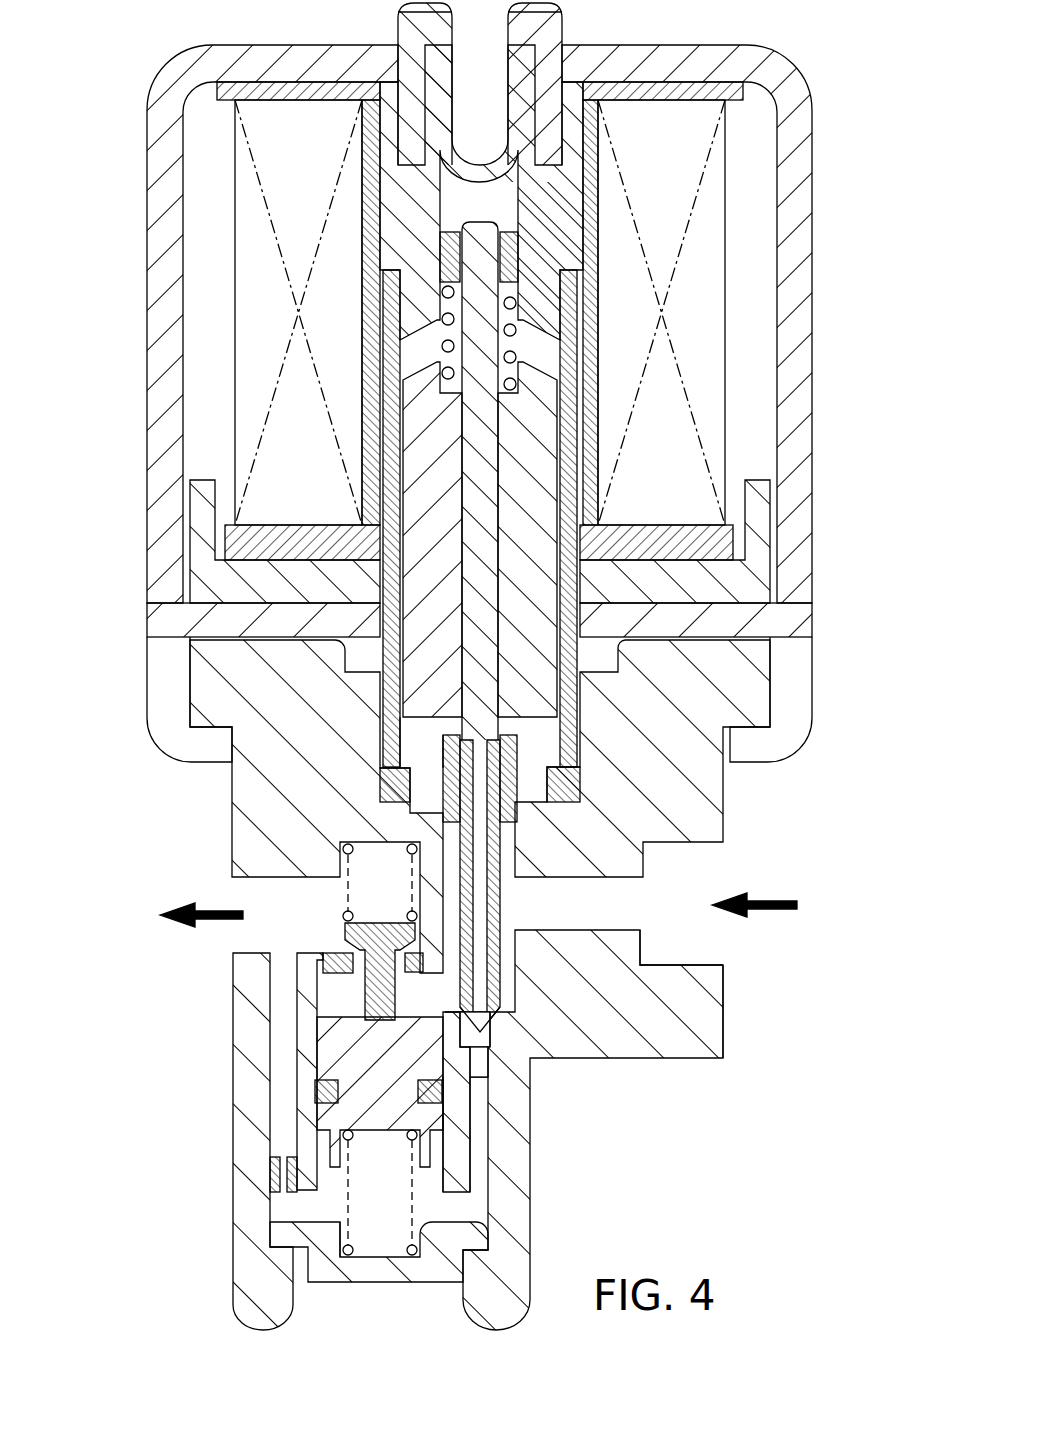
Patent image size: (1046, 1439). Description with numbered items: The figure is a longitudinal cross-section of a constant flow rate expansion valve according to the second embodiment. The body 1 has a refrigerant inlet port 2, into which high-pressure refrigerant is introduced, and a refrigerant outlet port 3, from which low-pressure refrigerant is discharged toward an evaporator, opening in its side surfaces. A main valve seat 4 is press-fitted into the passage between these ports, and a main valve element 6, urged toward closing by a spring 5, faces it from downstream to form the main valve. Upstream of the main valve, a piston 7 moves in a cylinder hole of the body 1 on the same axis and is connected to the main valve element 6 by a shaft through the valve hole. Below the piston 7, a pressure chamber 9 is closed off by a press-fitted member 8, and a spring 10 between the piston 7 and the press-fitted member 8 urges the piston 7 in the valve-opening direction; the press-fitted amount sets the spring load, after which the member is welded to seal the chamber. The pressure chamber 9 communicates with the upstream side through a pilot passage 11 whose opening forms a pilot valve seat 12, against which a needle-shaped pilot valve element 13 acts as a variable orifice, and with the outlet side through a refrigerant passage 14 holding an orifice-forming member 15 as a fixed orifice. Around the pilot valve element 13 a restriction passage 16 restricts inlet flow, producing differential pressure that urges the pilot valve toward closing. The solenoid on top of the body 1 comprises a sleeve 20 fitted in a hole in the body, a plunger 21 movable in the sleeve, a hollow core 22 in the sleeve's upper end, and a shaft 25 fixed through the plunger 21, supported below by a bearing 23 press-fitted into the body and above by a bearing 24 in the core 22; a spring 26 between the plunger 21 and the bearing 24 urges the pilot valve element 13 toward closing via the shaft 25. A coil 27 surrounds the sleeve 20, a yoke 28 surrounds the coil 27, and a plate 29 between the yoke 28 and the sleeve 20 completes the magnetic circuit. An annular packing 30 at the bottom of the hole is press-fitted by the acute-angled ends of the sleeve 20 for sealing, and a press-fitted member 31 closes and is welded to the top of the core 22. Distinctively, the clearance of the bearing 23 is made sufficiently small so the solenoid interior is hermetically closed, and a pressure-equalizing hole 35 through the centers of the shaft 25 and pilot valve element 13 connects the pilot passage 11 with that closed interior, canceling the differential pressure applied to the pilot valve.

The body 1 is at (725, 1030).
The refrigerant inlet port 2 is at (725, 962).
The refrigerant outlet port 3 is at (245, 880).
The main valve seat 4 is at (330, 985).
The spring 5 is at (345, 900).
The main valve element 6 is at (345, 943).
The piston 7 is at (310, 1070).
The press-fitted member 8 is at (355, 1285).
The pressure chamber 9 is at (388, 1206).
The spring 10 is at (340, 1210).
The pilot passage 11 is at (485, 1162).
The pilot valve seat 12 is at (490, 1040).
The pilot valve element 13 is at (492, 1012).
The refrigerant passage 14 is at (280, 1100).
The orifice-forming member 15 is at (275, 1170).
The restriction passage 16 is at (725, 1000).
The sleeve 20 is at (410, 742).
The plunger 21 is at (545, 410).
The core 22 is at (565, 135).
The bearing 23 is at (505, 815).
The bearing 24 is at (510, 215).
The shaft 25 is at (568, 730).
The spring 26 is at (517, 330).
The coil 27 is at (260, 300).
The yoke 28 is at (148, 405).
The plate 29 is at (150, 620).
The annular packing 30 is at (395, 790).
The press-fitted member 31 is at (455, 88).
The pressure-equalizing hole 35 is at (485, 850).